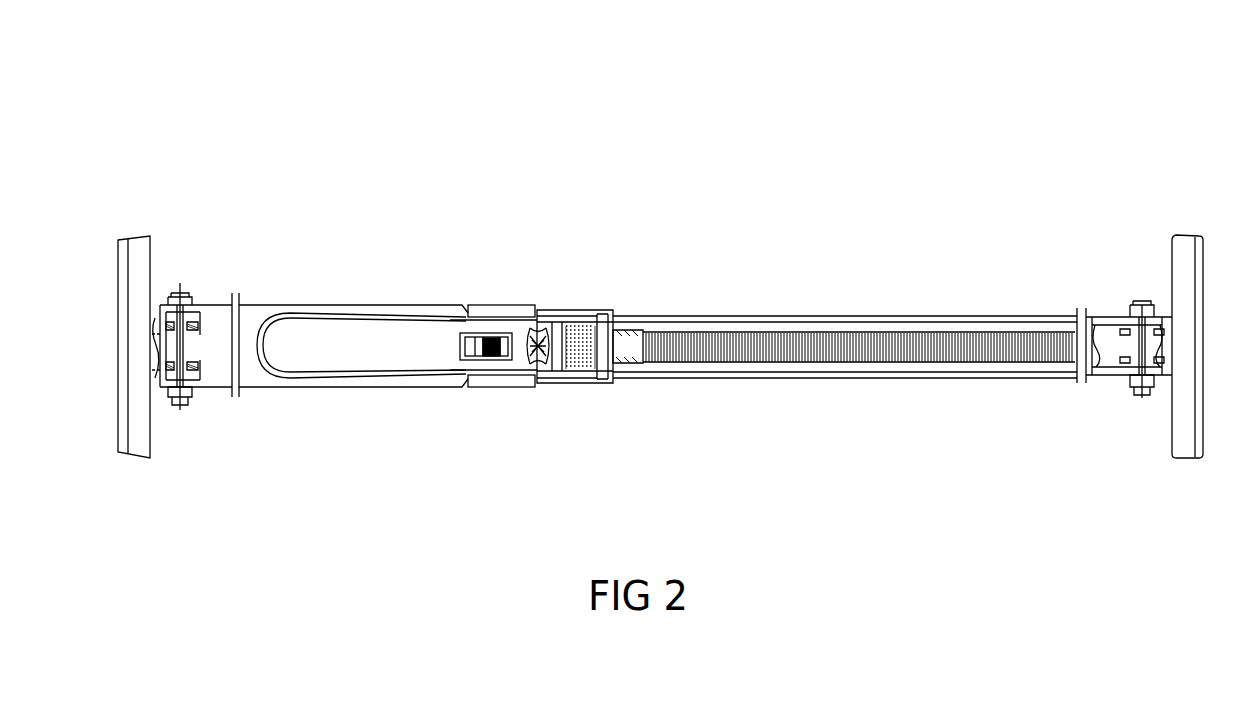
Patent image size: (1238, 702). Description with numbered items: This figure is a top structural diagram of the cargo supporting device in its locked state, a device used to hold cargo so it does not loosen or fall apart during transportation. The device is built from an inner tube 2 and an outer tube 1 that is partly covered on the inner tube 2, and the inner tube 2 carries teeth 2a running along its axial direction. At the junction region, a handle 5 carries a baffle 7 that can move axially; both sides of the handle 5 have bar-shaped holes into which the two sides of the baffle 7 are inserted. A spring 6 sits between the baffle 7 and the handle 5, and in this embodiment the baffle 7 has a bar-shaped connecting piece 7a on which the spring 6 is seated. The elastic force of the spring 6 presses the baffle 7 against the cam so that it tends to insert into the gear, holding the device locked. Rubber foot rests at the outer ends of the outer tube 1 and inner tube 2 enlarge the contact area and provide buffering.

The outer tube 1 is at (265, 315).
The inner tube 2 is at (990, 325).
The teeth 2a is at (875, 335).
The handle 5 is at (377, 343).
The spring 6 is at (547, 376).
The baffle 7 is at (568, 337).
The bar-shape connecting piece 7a is at (551, 337).